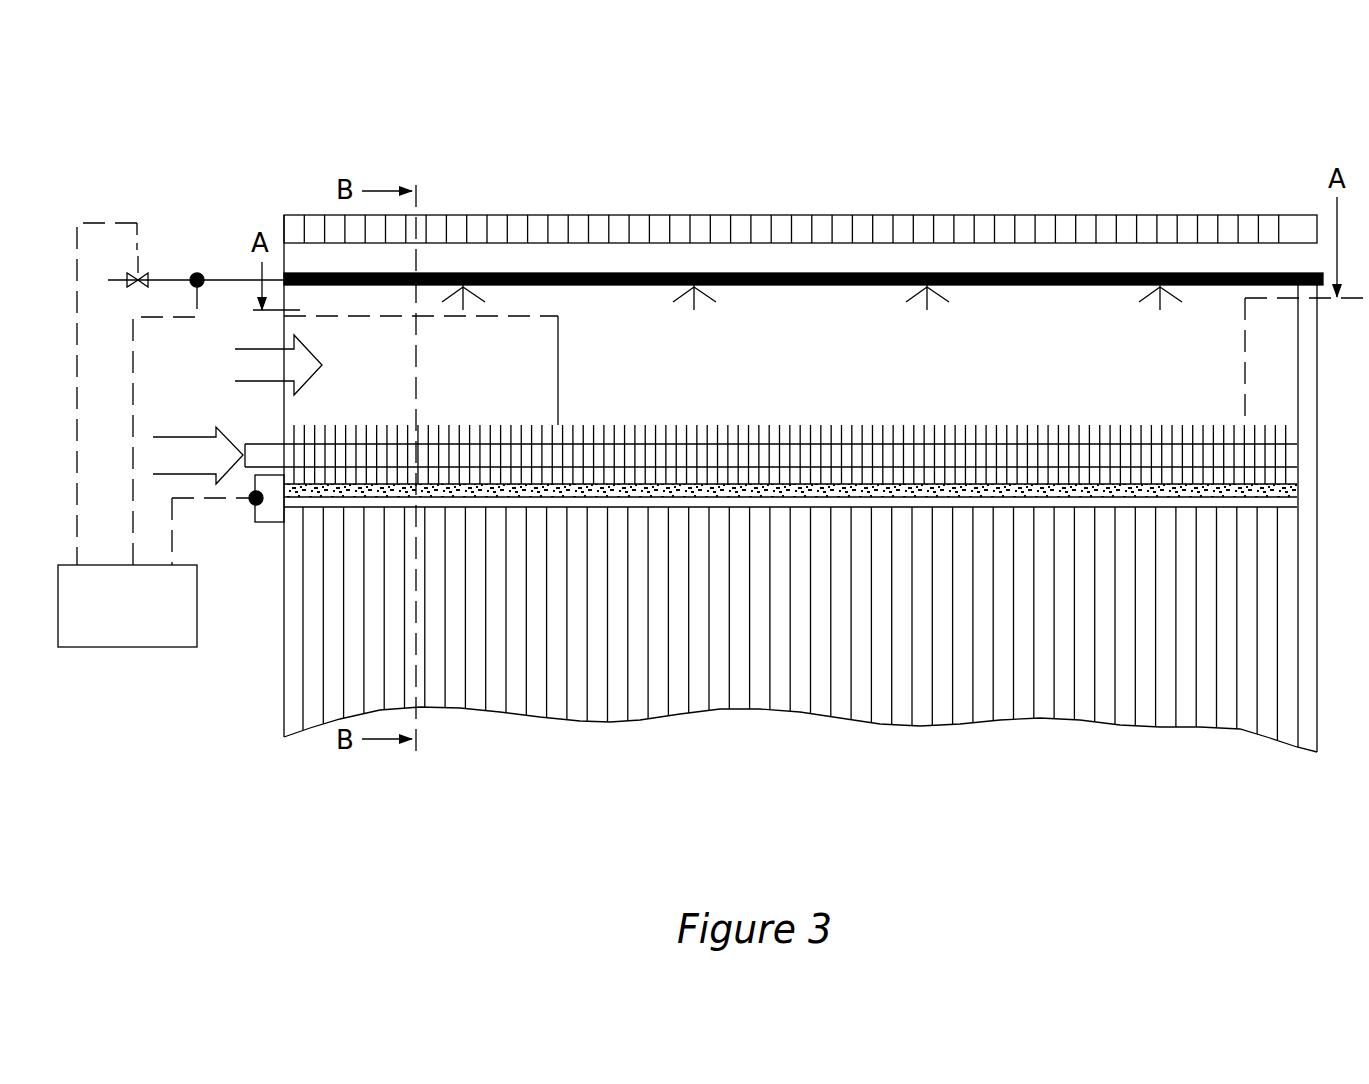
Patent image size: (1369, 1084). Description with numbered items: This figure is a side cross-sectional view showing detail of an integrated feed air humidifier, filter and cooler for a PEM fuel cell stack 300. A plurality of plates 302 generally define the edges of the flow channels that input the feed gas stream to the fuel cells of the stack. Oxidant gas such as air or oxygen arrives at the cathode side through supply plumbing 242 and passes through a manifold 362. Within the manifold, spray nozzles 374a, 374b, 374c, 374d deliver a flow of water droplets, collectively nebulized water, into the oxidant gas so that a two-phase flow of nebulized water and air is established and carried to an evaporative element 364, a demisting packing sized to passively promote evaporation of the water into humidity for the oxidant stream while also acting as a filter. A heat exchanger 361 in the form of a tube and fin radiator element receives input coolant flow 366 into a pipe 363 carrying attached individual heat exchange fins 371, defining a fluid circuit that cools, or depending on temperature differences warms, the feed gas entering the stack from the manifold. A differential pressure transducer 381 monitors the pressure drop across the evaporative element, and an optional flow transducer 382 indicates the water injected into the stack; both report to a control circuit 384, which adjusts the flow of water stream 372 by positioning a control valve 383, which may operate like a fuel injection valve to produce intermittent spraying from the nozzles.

The fuel cell stack 300 is at (548, 826).
The plates 302 is at (895, 683).
The supply plumbing 242 is at (278, 365).
The heat exchanger 361 is at (1068, 421).
The manifold 362 is at (648, 353).
The pipe 363 is at (266, 448).
The evaporative element 364 is at (855, 493).
The input coolant flow 366 is at (160, 469).
The heat exchange fins 371 is at (818, 460).
The water stream 372 is at (240, 278).
The spray nozzle 374a is at (485, 289).
The spray nozzle 374b is at (715, 289).
The spray nozzle 374c is at (947, 289).
The spray nozzle 374d is at (1178, 289).
The differential pressure transducer 381 is at (253, 510).
The flow transducer 382 is at (197, 273).
The control valve 383 is at (138, 252).
The control circuit 384 is at (98, 624).